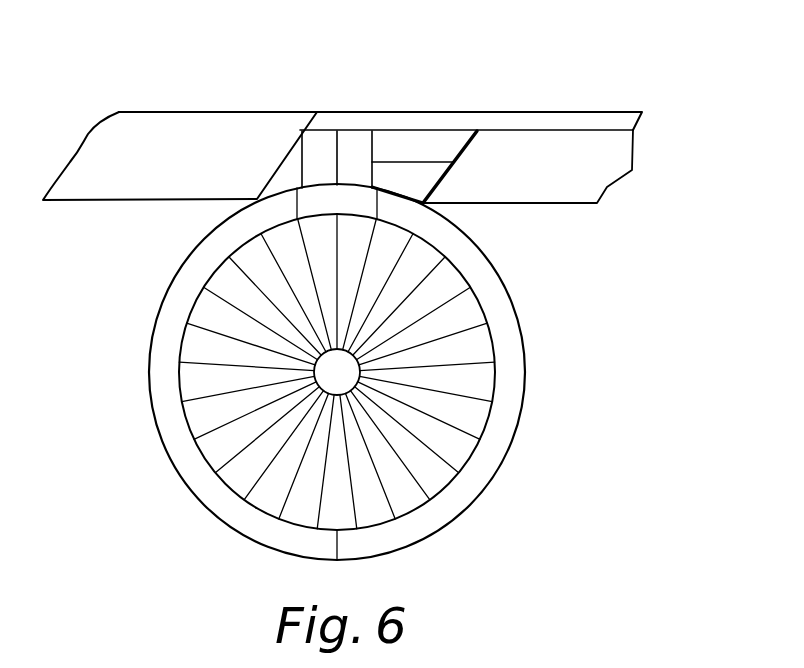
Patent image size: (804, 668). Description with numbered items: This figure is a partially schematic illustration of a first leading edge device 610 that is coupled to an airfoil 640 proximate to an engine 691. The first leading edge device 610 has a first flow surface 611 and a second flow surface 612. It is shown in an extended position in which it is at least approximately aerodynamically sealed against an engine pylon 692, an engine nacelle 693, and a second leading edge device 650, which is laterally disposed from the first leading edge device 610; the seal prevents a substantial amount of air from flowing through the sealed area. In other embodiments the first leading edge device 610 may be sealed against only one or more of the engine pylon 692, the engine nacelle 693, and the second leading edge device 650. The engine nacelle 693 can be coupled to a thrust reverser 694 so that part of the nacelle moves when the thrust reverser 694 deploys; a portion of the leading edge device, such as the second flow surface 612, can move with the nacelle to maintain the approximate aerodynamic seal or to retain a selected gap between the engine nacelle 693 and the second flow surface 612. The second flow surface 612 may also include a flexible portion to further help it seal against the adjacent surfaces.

The first leading edge device 610 is at (402, 157).
The first flow surface 611 is at (427, 152).
The second flow surface 612 is at (422, 178).
The airfoil 640 is at (600, 112).
The second leading edge device 650 is at (501, 147).
The engine 691 is at (548, 490).
The engine pylon 692 is at (348, 147).
The engine nacelle 693 is at (147, 345).
The thrust reverser 694 is at (167, 287).